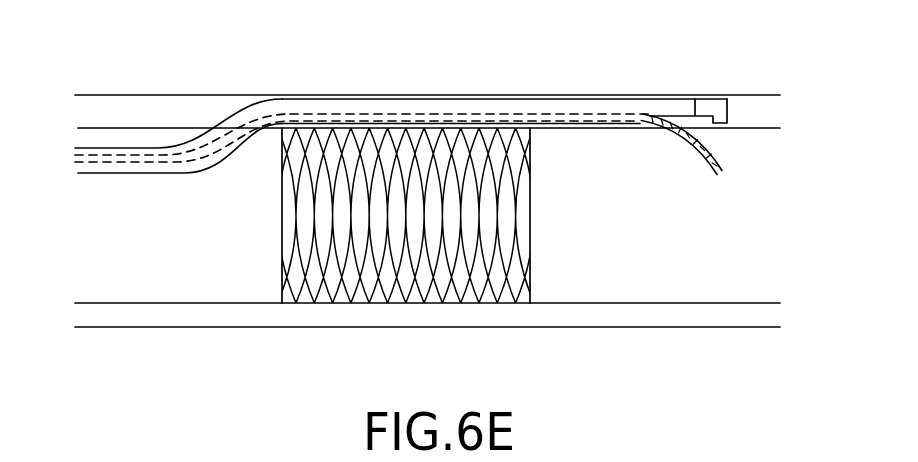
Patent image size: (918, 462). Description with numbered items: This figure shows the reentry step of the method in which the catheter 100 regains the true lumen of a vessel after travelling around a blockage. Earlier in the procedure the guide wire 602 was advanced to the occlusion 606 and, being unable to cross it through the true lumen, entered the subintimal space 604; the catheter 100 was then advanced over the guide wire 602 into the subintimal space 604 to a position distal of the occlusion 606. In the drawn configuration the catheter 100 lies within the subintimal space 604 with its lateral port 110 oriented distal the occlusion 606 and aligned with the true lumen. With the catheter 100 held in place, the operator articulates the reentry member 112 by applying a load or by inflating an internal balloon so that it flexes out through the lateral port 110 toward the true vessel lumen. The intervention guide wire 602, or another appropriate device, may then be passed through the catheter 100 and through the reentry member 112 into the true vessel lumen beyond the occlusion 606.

The catheter 100 is at (608, 97).
The lateral port 110 is at (696, 98).
The reentry member 112 is at (687, 146).
The guide wire 602 is at (720, 172).
The subintimal space 604 is at (214, 101).
The occlusion 606 is at (448, 300).